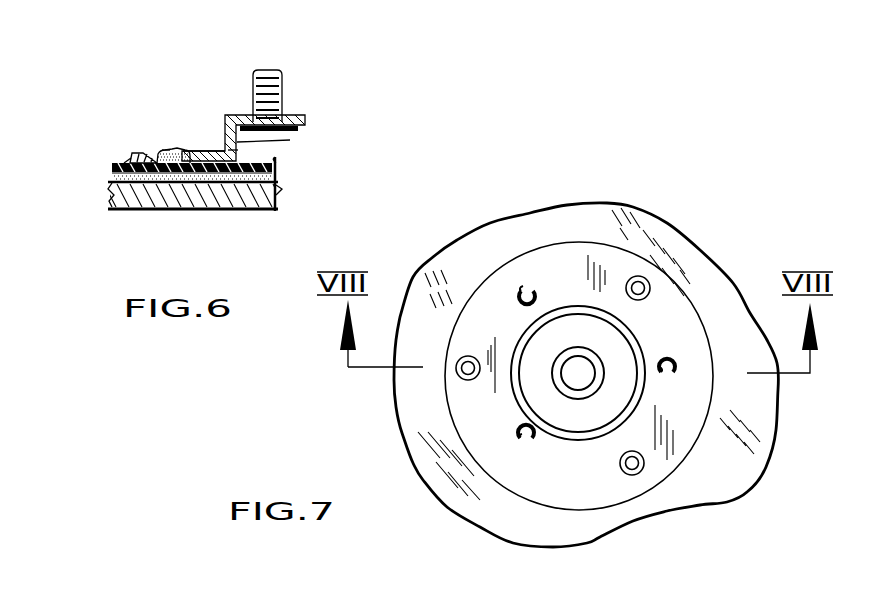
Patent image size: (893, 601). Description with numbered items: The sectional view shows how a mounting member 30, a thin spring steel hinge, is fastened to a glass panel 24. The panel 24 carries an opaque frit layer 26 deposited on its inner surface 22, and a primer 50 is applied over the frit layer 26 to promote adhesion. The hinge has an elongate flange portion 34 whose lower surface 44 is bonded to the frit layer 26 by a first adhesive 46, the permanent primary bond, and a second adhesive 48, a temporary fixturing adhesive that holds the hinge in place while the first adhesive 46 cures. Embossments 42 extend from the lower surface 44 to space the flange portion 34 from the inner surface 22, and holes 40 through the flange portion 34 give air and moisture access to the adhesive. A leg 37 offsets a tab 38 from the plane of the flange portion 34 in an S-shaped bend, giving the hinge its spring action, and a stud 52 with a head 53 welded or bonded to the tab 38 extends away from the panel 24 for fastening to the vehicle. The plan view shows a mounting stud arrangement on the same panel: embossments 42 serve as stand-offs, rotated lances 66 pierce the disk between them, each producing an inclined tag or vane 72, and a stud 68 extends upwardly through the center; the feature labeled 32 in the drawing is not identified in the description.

In FIG. 7, the inner surface 22 is at (703, 270).
In FIG. 6, the panel 24 is at (152, 210).
In FIG. 6, the frit layer 26 is at (277, 183).
In FIG. 6, the mounting member 30 is at (322, 80).
In FIG. 7, the rotor 32 is at (757, 292).
In FIG. 6, the flange portion 34 is at (190, 147).
In FIG. 6, the leg 37 is at (290, 140).
In FIG. 6, the tab 38 is at (303, 117).
In FIG. 6, the holes 40 is at (148, 152).
In FIG. 6, the embossments 42 is at (145, 150).
In FIG. 7, the embossments 42 is at (642, 277).
In FIG. 6, the lower surface 44 is at (232, 150).
In FIG. 6, the first adhesive 46 is at (203, 150).
In FIG. 6, the second adhesive 48 is at (128, 160).
In FIG. 6, the primer 50 is at (277, 176).
In FIG. 6, the stud 52 is at (283, 90).
In FIG. 6, the head 53 is at (298, 128).
In FIG. 7, the rotated lances 66 is at (537, 287).
In FIG. 7, the stud 68 is at (577, 347).
In FIG. 7, the vane 72 is at (513, 310).